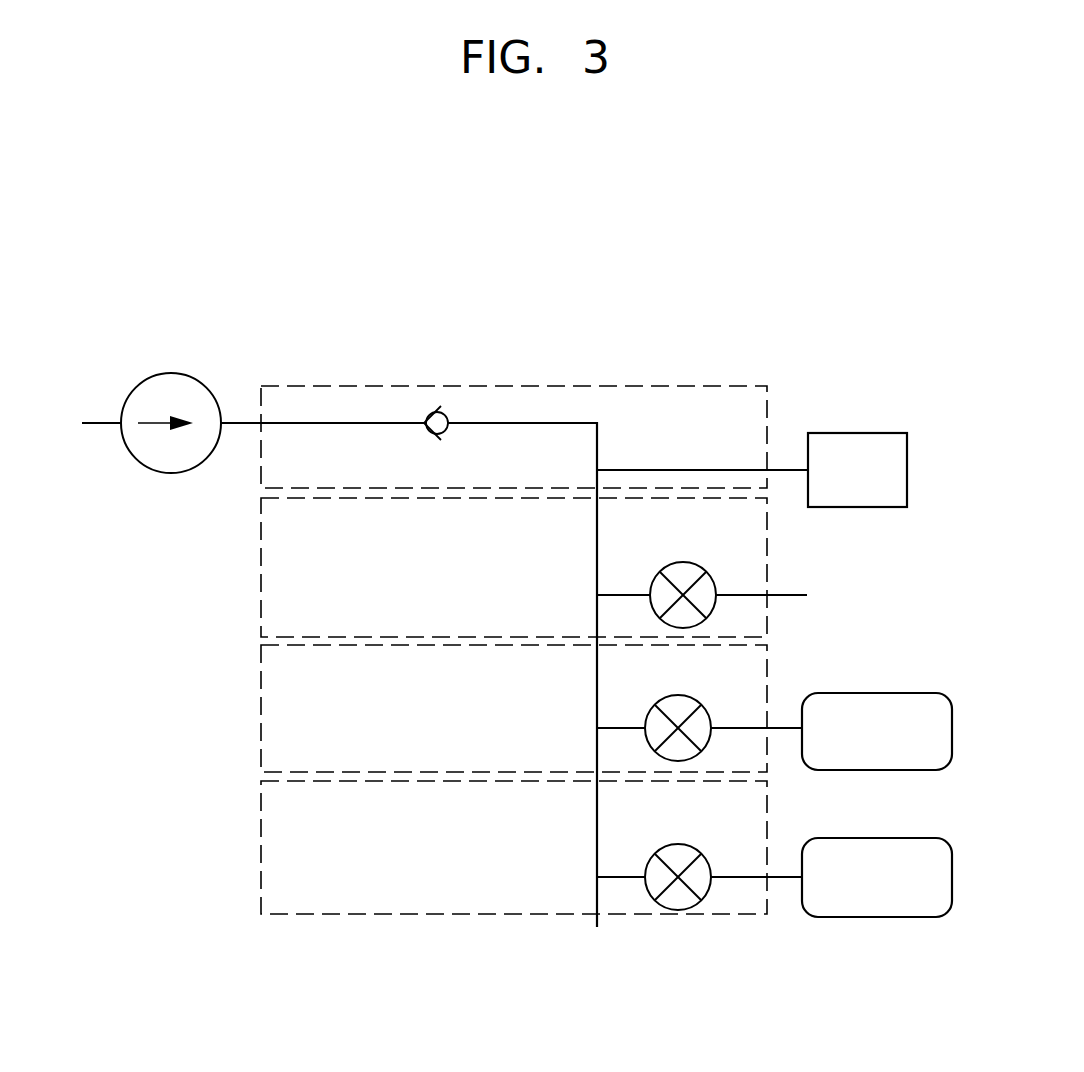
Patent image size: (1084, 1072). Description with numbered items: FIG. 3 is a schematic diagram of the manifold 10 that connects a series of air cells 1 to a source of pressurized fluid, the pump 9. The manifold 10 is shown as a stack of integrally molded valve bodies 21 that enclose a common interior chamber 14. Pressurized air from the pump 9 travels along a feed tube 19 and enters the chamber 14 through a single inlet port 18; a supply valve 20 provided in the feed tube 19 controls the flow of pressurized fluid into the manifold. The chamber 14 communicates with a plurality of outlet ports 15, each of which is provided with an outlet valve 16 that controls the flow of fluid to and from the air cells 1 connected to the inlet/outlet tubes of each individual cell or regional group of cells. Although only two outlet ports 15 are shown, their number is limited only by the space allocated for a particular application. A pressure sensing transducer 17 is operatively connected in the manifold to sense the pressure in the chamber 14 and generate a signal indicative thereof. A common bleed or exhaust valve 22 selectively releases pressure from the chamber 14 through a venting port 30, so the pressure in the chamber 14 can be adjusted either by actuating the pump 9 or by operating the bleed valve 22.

The air cells 1 is at (880, 745).
The pump 9 is at (177, 409).
The manifold 10 is at (459, 603).
The chamber 14 is at (598, 421).
The outlet ports 15 is at (777, 723).
The outlet valves 16 is at (708, 708).
The pressure sensing transducer 17 is at (871, 479).
The inlet port 18 is at (510, 421).
The feed tube 19 is at (240, 418).
The supply valve 20 is at (448, 428).
The valve bodies 21 is at (260, 480).
The bleed valve 22 is at (735, 553).
The venting port 30 is at (807, 595).